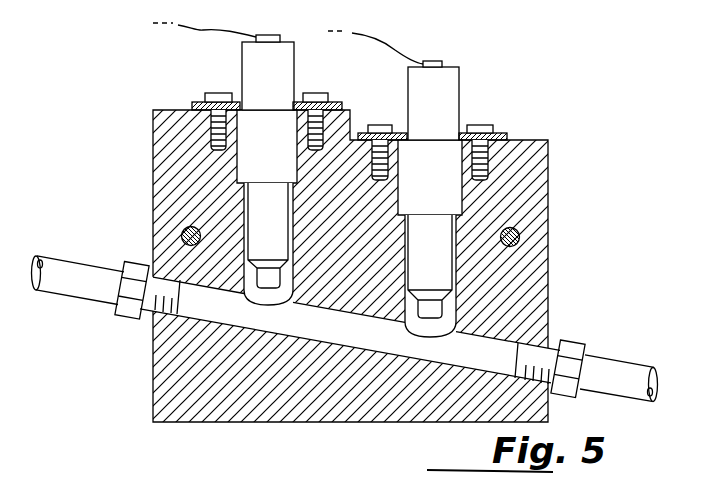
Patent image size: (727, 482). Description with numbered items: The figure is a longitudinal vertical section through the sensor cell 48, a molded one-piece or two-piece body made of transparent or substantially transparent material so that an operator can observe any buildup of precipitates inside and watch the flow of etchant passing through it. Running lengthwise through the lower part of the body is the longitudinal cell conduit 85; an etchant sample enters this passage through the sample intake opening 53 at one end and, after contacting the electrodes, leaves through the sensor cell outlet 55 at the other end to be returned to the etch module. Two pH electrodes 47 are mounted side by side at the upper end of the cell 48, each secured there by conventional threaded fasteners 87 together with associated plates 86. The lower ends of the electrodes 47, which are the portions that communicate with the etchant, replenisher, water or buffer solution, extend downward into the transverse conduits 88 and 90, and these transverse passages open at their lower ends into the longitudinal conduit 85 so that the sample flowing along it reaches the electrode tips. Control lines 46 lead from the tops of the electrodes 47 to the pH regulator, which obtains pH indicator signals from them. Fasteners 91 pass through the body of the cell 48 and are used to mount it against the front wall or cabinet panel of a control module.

The control lines 46 is at (205, 29).
The pH electrodes 47 is at (285, 77).
The sensor cell 48 is at (548, 300).
The sample intake opening 53 is at (624, 368).
The sensor cell outlet 55 is at (92, 291).
The longitudinal cell conduit 85 is at (328, 342).
The washer plate 86 is at (505, 135).
The threaded fasteners 87 is at (477, 130).
The transverse conduit 88 is at (462, 285).
The transverse conduit 90 is at (240, 205).
The fasteners 91 is at (180, 232).